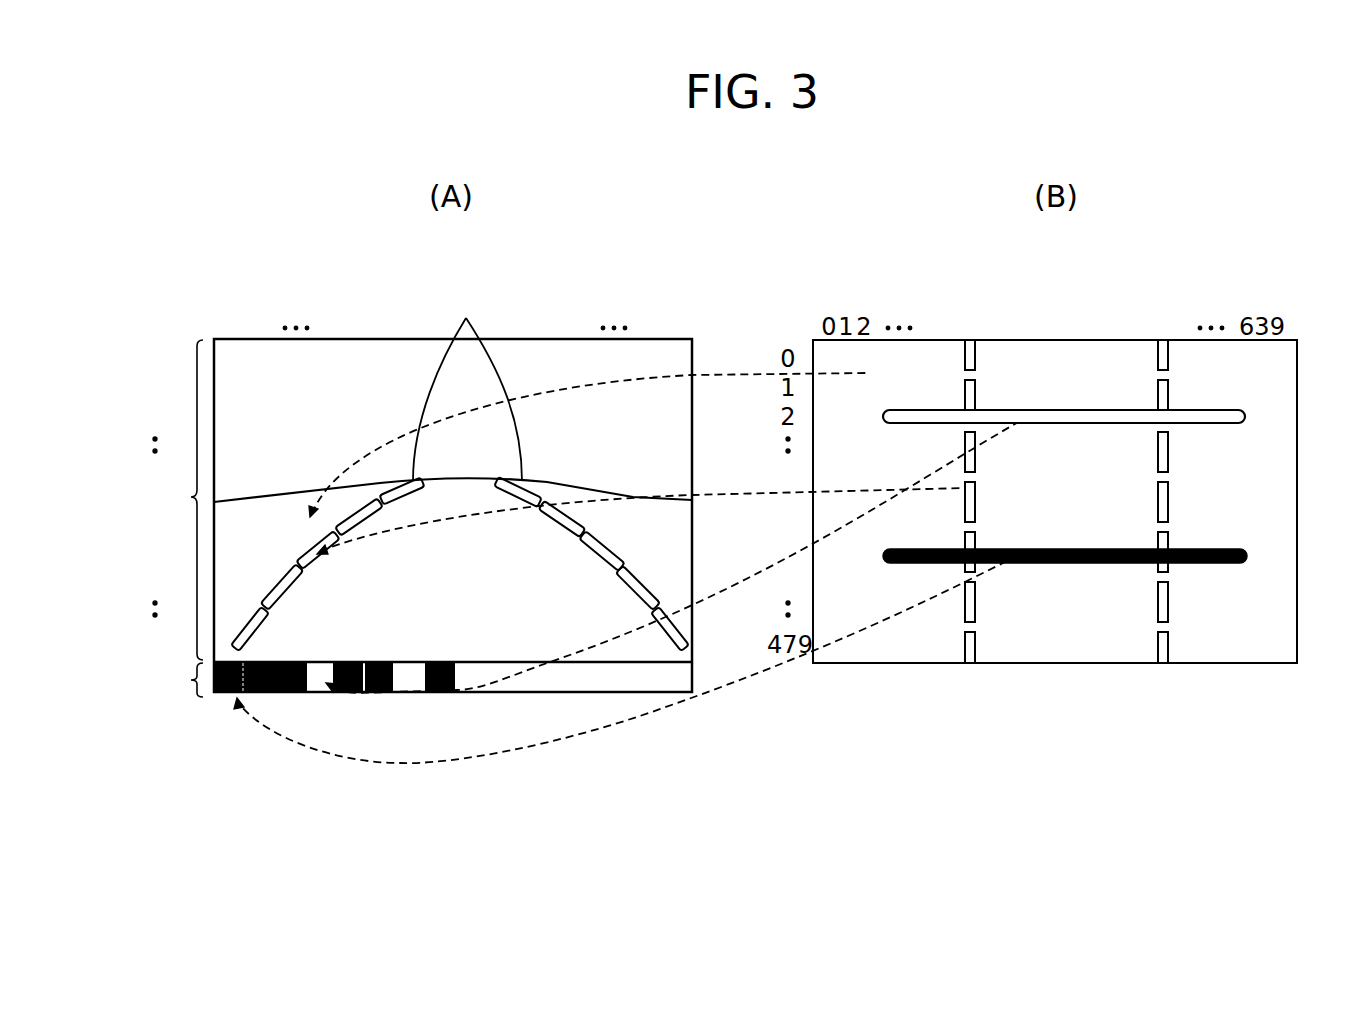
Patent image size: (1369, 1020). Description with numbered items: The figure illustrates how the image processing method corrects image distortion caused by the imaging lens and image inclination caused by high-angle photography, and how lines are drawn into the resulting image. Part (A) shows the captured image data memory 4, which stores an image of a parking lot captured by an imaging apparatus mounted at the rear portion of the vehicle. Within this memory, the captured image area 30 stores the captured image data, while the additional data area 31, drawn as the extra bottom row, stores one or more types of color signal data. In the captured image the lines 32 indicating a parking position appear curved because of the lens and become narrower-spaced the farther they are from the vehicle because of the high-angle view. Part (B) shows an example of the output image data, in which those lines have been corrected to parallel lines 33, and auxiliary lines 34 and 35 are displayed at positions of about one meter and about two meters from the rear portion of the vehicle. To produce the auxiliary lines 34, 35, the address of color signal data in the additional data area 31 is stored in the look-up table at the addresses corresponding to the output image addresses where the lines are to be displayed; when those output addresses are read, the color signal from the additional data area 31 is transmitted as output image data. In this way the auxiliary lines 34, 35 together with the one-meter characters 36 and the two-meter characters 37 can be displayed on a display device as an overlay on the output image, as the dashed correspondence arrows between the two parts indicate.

The captured image data memory 4 is at (533, 312).
The captured image area 30 is at (193, 497).
The additional data area 31 is at (191, 680).
The lines indicating a parking position 32 is at (466, 320).
The parallel lines 33 is at (975, 352).
The auxiliary line 34 is at (1068, 565).
The auxiliary line 35 is at (1072, 410).
The characters "1 m" 36 is at (1292, 555).
The characters "2 m" 37 is at (1292, 415).